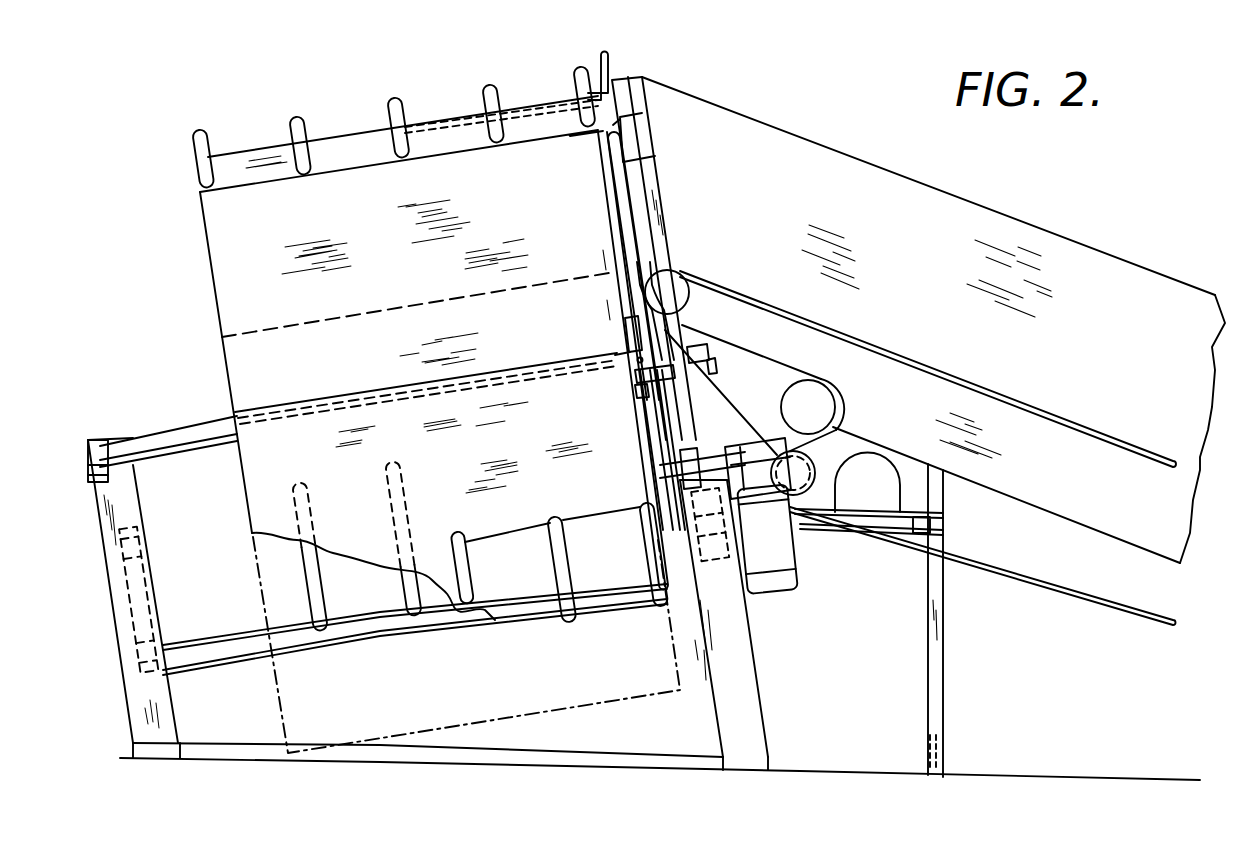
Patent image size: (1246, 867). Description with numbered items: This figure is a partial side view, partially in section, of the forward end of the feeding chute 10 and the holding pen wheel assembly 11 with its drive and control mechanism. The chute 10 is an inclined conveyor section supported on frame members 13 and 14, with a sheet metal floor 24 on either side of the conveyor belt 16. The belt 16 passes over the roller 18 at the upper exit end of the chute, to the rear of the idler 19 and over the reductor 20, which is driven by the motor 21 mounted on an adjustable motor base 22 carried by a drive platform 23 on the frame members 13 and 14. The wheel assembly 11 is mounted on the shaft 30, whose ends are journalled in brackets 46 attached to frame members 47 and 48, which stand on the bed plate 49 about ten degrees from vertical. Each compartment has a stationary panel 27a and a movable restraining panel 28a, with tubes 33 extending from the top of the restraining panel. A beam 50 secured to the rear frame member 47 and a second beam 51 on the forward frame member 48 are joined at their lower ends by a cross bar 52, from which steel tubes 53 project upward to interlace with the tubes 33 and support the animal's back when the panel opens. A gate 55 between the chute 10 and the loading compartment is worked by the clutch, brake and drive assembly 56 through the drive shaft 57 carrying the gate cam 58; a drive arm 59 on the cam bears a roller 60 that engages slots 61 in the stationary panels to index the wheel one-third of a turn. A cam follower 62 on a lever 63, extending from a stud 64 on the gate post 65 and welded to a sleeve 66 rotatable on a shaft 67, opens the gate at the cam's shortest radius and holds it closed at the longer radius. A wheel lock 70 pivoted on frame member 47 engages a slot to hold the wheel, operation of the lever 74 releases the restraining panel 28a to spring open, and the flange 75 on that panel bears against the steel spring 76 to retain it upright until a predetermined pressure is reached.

The chute 10 is at (1010, 205).
The holding pen wheel assembly 11 is at (438, 92).
The frame member 13 is at (940, 660).
The frame member 14 is at (760, 400).
The conveyor belt 16 is at (1200, 455).
The roller 18 is at (683, 290).
The idler 19 is at (832, 398).
The reductor 20 is at (806, 460).
The motor 21 is at (870, 505).
The adjustable motor base 22 is at (920, 510).
The drive platform 23 is at (815, 535).
The floor 24 is at (1048, 497).
The stationary panel 27a is at (256, 157).
The restraining panel 28a is at (200, 222).
The shaft 30 is at (190, 440).
The tubes 33 is at (393, 100).
The brackets 46 is at (95, 440).
The rear frame member 47 is at (745, 662).
The forward frame member 48 is at (140, 492).
The bed plate 49 is at (547, 762).
The beam 50 is at (653, 222).
The second beam 51 is at (150, 572).
The cross bar 52 is at (222, 632).
The steel tubes 53 is at (420, 625).
The gate 55 is at (622, 185).
The clutch, brake and drive assembly 56 is at (782, 590).
The drive shaft 57 is at (710, 462).
The gate cam 58 is at (643, 532).
The drive arm 59 is at (652, 450).
The roller 60 is at (652, 425).
The slots 61 is at (612, 228).
The cam follower 62 is at (648, 468).
The lever 63 is at (700, 383).
The stud 64 is at (615, 352).
The gate post 65 is at (665, 340).
The sleeve 66 is at (636, 380).
The shaft 67 is at (640, 398).
The wheel lock 70 is at (630, 345).
The lever 74 is at (604, 55).
The flange 75 is at (640, 128).
The steel spring 76 is at (621, 80).